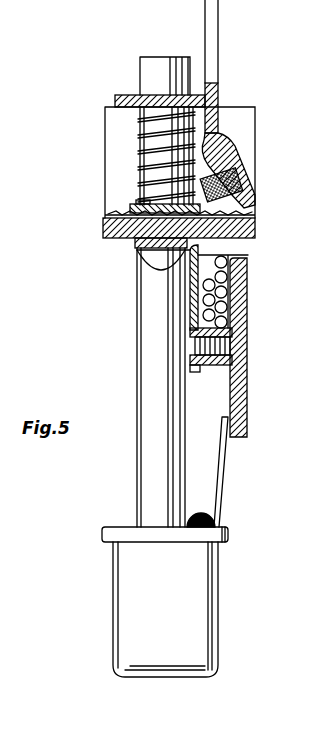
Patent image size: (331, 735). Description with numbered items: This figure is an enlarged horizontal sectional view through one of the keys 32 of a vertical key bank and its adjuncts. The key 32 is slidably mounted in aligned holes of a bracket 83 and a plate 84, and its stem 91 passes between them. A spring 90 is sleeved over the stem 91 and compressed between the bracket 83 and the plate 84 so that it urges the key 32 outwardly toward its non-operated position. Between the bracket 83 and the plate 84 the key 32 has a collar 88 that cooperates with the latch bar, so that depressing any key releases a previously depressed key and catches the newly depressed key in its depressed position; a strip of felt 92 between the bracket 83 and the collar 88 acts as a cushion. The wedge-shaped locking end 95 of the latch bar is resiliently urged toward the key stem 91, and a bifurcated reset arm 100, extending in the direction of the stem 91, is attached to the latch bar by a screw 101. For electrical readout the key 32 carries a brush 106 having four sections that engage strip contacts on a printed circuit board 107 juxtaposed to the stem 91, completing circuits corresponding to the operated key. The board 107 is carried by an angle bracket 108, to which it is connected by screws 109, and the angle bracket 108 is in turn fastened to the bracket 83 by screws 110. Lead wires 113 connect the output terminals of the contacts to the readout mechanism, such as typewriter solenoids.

The key 32 is at (212, 629).
The bracket 83 is at (111, 240).
The plate 84 is at (121, 95).
The collar 88 is at (130, 207).
The spring 90 is at (140, 114).
The stem 91 is at (172, 57).
The strip of felt 92 is at (110, 213).
The locking end 95 is at (218, 131).
The reset arm 100 is at (220, 36).
The screw 101 is at (250, 164).
The brush 106 is at (224, 470).
The printed circuit board 107 is at (248, 389).
The angle bracket 108 is at (193, 322).
The screw 109 is at (244, 347).
The screw 110 is at (156, 266).
The lead wire 113 is at (220, 258).